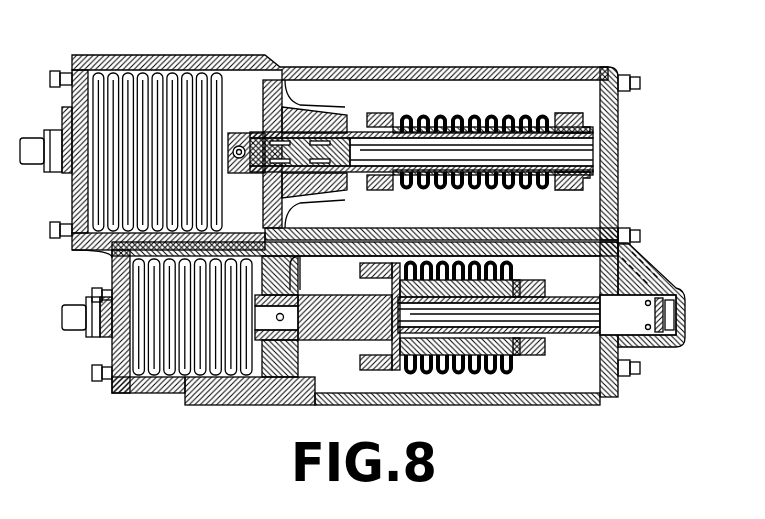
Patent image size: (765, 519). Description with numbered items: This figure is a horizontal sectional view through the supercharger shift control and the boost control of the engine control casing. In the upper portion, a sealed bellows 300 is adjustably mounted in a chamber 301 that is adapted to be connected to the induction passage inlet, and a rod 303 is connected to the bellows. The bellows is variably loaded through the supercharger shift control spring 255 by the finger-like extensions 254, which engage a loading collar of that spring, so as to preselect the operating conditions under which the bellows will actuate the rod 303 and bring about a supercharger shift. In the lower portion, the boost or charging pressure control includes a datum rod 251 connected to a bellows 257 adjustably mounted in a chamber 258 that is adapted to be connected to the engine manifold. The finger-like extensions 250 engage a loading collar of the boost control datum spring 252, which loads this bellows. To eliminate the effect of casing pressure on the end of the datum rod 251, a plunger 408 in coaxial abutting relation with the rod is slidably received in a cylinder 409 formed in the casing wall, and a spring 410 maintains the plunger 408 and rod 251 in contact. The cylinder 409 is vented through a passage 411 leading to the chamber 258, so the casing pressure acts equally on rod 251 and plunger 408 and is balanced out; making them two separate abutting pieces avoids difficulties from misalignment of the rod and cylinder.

The sealed bellows 300 is at (190, 75).
The chamber 301 is at (270, 66).
The rod 303 is at (262, 150).
The finger-like extensions 254 is at (382, 118).
The supercharger shift control spring 255 is at (563, 88).
The bellows 257 is at (155, 368).
The chamber 258 is at (228, 377).
The datum rod 251 is at (347, 327).
The finger-like extensions 250 is at (440, 333).
The boost control datum spring 252 is at (475, 331).
The plunger 408 is at (553, 302).
The cylinder 409 is at (658, 342).
The spring 410 is at (683, 312).
The passage 411 is at (655, 256).